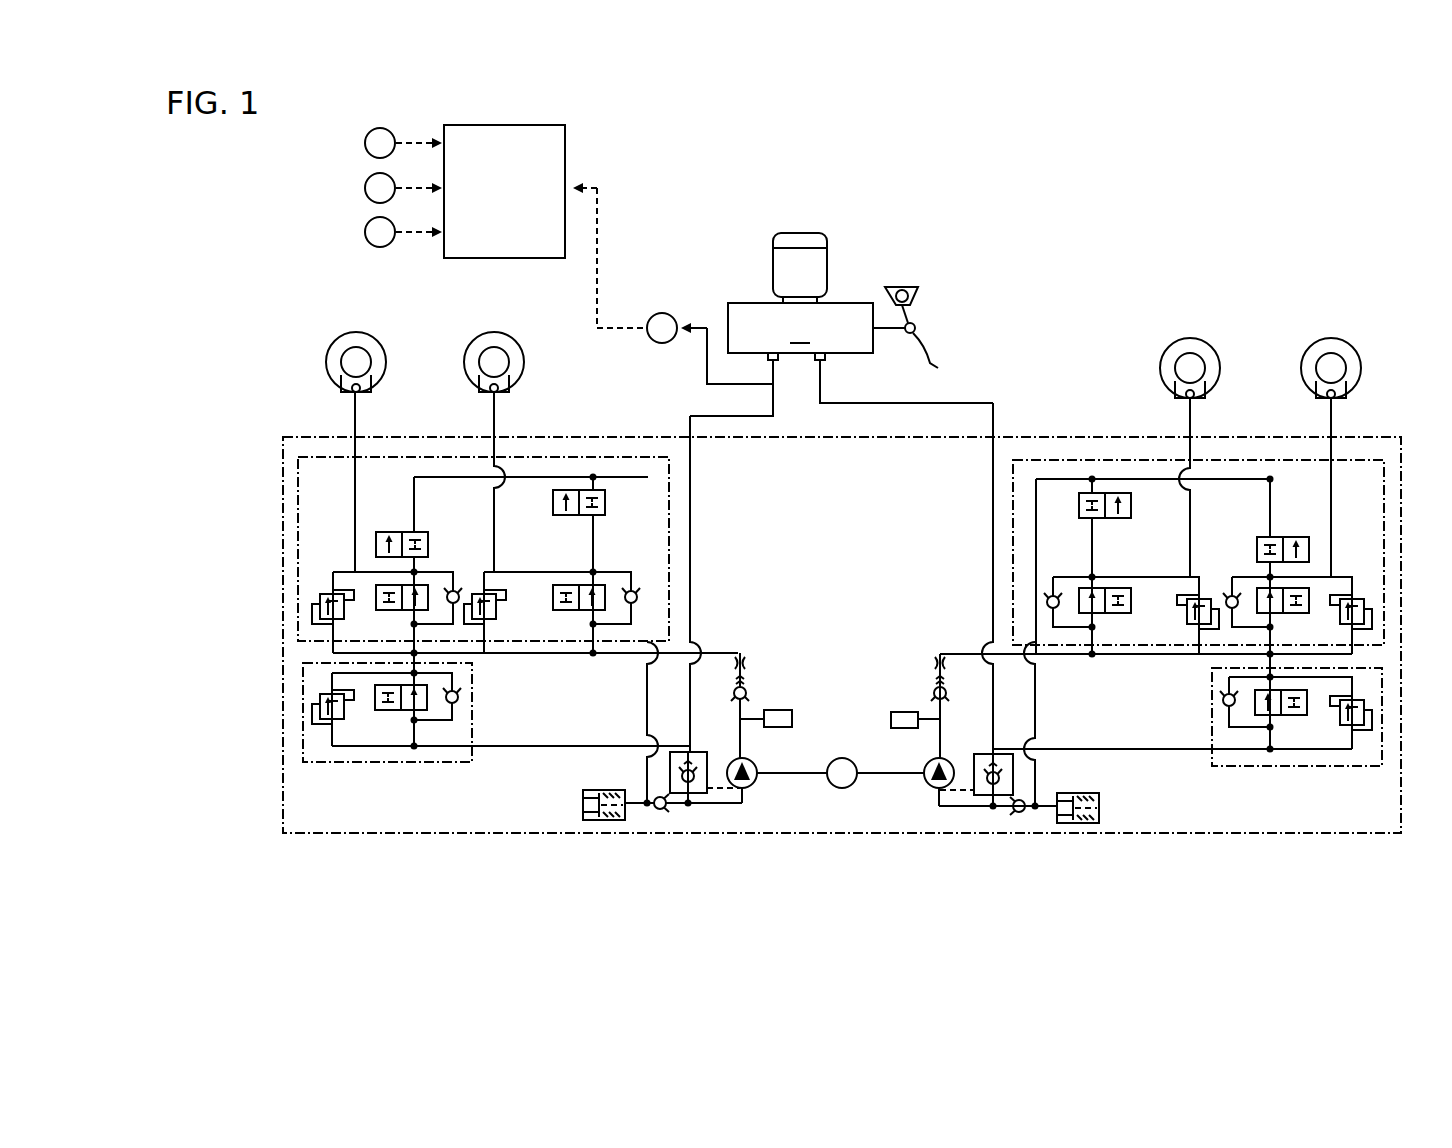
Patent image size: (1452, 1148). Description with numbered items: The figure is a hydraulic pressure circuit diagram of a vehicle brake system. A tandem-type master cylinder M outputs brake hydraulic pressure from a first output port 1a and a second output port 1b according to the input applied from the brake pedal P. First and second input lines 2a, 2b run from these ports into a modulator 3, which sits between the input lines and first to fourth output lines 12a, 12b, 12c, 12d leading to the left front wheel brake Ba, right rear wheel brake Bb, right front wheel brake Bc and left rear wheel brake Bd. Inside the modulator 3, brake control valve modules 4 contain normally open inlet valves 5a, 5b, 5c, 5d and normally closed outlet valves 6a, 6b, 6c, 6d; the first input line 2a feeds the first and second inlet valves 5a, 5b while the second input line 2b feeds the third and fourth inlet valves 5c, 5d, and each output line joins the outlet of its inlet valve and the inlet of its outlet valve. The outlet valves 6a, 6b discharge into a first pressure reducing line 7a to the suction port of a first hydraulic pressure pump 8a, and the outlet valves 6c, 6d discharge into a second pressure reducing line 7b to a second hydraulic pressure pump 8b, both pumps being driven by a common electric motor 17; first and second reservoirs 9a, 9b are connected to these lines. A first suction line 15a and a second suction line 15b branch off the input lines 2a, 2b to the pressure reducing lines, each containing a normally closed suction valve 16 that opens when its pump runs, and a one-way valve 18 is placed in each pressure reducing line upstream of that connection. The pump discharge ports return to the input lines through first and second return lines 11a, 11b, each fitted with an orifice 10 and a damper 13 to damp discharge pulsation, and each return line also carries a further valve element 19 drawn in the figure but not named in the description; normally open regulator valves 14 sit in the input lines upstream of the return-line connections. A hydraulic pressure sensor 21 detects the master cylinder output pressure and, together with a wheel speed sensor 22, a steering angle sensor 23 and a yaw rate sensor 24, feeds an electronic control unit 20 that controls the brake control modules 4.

The first output port 1a is at (777, 364).
The second output port 1b is at (824, 364).
The first input line 2a is at (697, 518).
The second input line 2b is at (990, 518).
The modulator 3 is at (1040, 437).
The brake control valve module 4 is at (548, 457).
The first inlet valve 5a is at (428, 588).
The second inlet valve 5b is at (566, 585).
The third inlet valve 5c is at (1256, 588).
The fourth inlet valve 5d is at (1108, 588).
The first outlet valve 6a is at (420, 532).
The second outlet valve 6b is at (553, 502).
The third outlet valve 6c is at (1276, 537).
The fourth outlet valve 6d is at (1131, 506).
The first pressure reducing line 7a is at (647, 683).
The second pressure reducing line 7b is at (1035, 690).
The first hydraulic pressure pump 8a is at (750, 789).
The second hydraulic pressure pump 8b is at (926, 785).
The first reservoir 9a is at (600, 792).
The second reservoir 9b is at (1088, 793).
The orifice 10 is at (748, 663).
The first return line 11a is at (716, 653).
The second return line 11b is at (938, 736).
The first output line 12a is at (355, 418).
The second output line 12b is at (494, 418).
The third output line 12c is at (1331, 414).
The fourth output line 12d is at (1190, 414).
The damper 13 is at (792, 717).
The regulator valve 14 is at (365, 762).
The first suction line 15a is at (692, 806).
The second suction line 15b is at (1000, 810).
The suction valve 16 is at (698, 762).
The electric motor 17 is at (840, 790).
The one-way valve 18 is at (661, 813).
The check valve 19 is at (731, 698).
The electronic control unit 20 is at (567, 152).
The hydraulic pressure sensor 21 is at (665, 316).
The wheel speed sensor 22 is at (365, 143).
The steering angle sensor 23 is at (365, 188).
The yaw rate sensor 24 is at (365, 232).
The left front wheel brake Ba is at (340, 350).
The right rear wheel brake Bb is at (478, 350).
The right front wheel brake Bc is at (1305, 355).
The left rear wheel brake Bd is at (1165, 355).
The brake pedal P is at (925, 333).
The master cylinder M is at (800, 293).